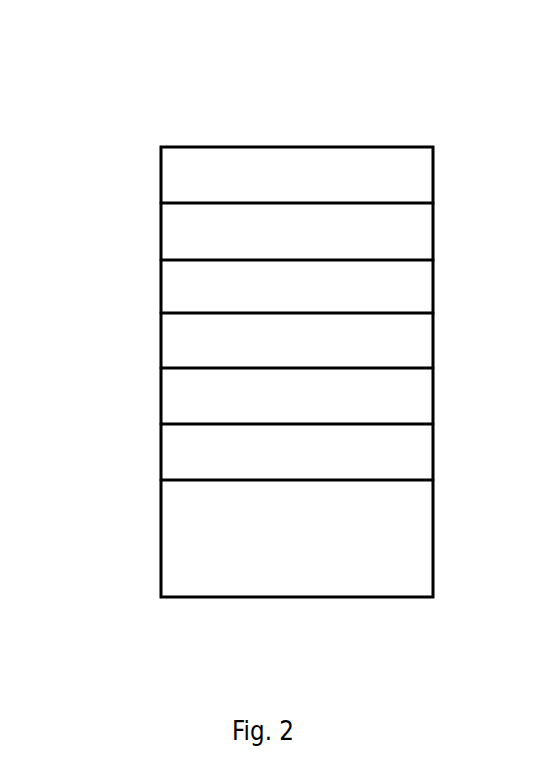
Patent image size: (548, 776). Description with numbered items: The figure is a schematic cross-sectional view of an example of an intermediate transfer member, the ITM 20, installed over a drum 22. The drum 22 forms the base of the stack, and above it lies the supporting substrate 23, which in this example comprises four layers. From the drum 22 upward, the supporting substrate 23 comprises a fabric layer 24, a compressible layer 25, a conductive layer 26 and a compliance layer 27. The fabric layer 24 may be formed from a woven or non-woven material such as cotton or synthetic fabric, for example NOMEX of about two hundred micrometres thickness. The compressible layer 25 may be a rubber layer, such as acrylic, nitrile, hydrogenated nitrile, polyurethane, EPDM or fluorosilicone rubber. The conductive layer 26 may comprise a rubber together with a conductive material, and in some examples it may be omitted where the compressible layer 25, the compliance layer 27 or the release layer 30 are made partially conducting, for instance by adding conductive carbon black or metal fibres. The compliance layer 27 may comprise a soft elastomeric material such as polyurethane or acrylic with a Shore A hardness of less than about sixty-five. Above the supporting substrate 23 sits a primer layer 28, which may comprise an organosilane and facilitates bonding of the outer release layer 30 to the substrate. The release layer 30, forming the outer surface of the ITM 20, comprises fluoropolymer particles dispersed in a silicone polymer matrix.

The ITM 20 is at (136, 120).
The drum 22 is at (297, 538).
The supporting substrate 23 is at (147, 262).
The fabric layer 24 is at (297, 452).
The compressible layer 25 is at (297, 396).
The conductive layer 26 is at (297, 340).
The compliance layer 27 is at (297, 286).
The primer layer 28 is at (297, 231).
The release layer 30 is at (297, 175).